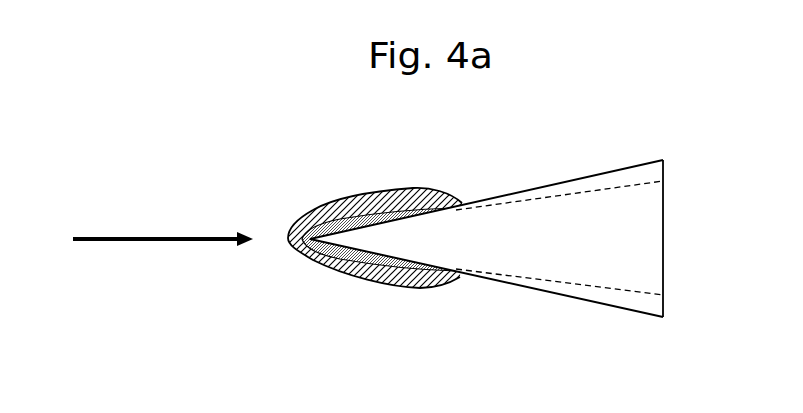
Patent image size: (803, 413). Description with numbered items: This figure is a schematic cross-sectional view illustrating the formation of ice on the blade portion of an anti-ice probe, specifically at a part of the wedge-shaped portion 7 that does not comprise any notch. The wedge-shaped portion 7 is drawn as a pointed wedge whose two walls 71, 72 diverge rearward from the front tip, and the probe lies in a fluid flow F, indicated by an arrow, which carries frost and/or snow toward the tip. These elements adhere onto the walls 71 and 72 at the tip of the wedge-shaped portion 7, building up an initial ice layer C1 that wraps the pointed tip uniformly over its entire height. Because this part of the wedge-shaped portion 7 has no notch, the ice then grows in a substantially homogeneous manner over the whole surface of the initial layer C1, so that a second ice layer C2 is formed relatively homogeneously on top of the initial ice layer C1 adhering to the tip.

The wedge-shaped portion 7 is at (513, 322).
The wall 71 is at (595, 173).
The wall 72 is at (602, 305).
The initial ice layer C1 is at (433, 188).
The ice layer C2 is at (362, 205).
The fluid flow F is at (163, 222).